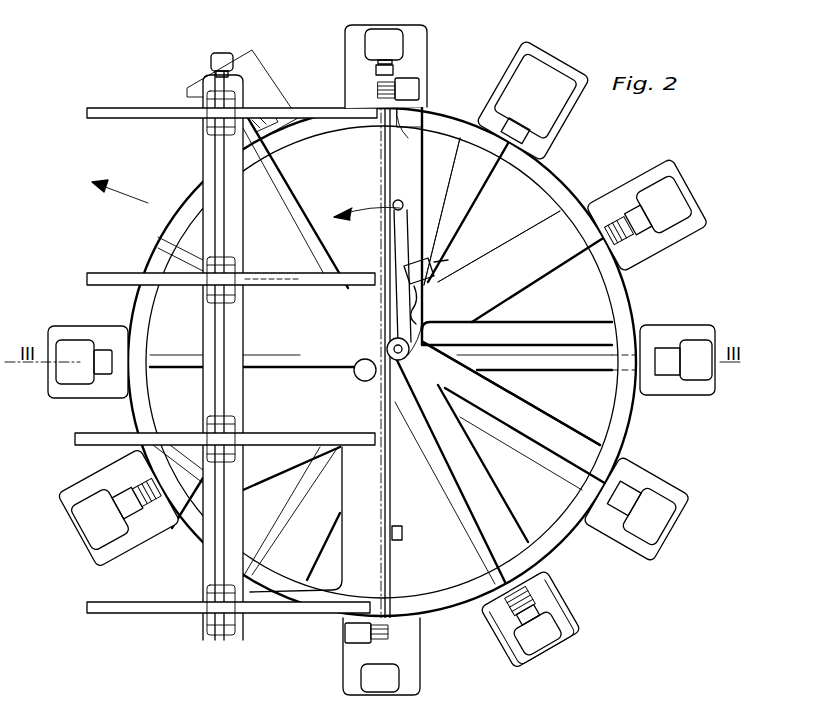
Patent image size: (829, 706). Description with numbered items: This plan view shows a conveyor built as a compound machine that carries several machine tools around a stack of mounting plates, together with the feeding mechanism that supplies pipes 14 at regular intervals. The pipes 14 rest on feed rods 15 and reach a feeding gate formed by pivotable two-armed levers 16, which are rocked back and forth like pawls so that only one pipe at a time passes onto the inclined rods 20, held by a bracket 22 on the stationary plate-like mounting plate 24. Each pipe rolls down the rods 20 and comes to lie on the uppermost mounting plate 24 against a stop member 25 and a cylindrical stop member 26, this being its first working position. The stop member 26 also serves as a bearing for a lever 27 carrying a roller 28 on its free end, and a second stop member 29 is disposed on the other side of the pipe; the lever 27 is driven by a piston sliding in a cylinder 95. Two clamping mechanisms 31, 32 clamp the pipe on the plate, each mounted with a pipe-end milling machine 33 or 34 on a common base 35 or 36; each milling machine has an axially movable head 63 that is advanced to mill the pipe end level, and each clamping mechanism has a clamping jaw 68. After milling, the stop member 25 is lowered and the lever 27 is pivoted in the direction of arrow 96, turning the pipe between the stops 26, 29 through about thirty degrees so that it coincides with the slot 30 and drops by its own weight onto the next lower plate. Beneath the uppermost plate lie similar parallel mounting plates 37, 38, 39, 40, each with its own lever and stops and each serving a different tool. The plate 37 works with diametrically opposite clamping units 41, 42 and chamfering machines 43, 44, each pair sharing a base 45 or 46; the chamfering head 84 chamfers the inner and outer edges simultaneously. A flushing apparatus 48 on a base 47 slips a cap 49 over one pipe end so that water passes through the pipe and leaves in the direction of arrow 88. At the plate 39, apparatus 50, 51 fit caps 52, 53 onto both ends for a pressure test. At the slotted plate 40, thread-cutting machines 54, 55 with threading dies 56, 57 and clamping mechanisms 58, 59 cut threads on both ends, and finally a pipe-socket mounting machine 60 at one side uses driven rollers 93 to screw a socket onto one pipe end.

The pipe 14 is at (380, 146).
The feed rods 15 is at (138, 108).
The two-armed levers 16 is at (208, 115).
The rods 20 is at (305, 118).
The bracket 22 is at (262, 278).
The mounting plate 24 is at (415, 140).
The stop member 25 is at (402, 528).
The stop member 26 is at (420, 346).
The lever 27 is at (400, 228).
The roller 28 is at (399, 200).
The second stop member 29 is at (366, 384).
The slot 30 is at (484, 183).
The clamping mechanism 31 is at (345, 640).
The clamping mechanism 32 is at (419, 88).
The pipe-end milling machine 33 is at (399, 680).
The pipe-end milling machine 34 is at (398, 36).
The base 35 is at (415, 664).
The base 36 is at (427, 54).
The mounting plate 37 is at (565, 436).
The mounting plate 38 is at (578, 330).
The mounting plate 39 is at (529, 237).
The mounting plate 40 is at (453, 170).
The clamping unit 41 is at (495, 612).
The clamping unit 42 is at (272, 108).
The chamfering machine 43 is at (530, 660).
The chamfering machine 44 is at (238, 58).
The base 45 is at (510, 640).
The base 46 is at (258, 82).
The base 47 is at (655, 488).
The flushing apparatus 48 is at (650, 540).
The cap 49 is at (618, 520).
The apparatus 50 is at (700, 345).
The apparatus 51 is at (72, 345).
The cap 52 is at (664, 350).
The cap 53 is at (102, 350).
The thread-cutting machine 54 is at (672, 178).
The thread-cutting machine 55 is at (90, 515).
The threading die 56 is at (640, 195).
The threading die 57 is at (100, 490).
The clamping mechanism 58 is at (640, 250).
The clamping mechanism 59 is at (135, 470).
The pipe-socket mounting machine 60 is at (540, 70).
The head 63 is at (375, 70).
The clamping jaw 68 is at (618, 226).
The head 84 is at (540, 600).
The arrow 88 is at (120, 189).
The driven rollers 93 is at (545, 125).
The cylinder 95 is at (445, 262).
The arrow 96 is at (367, 225).